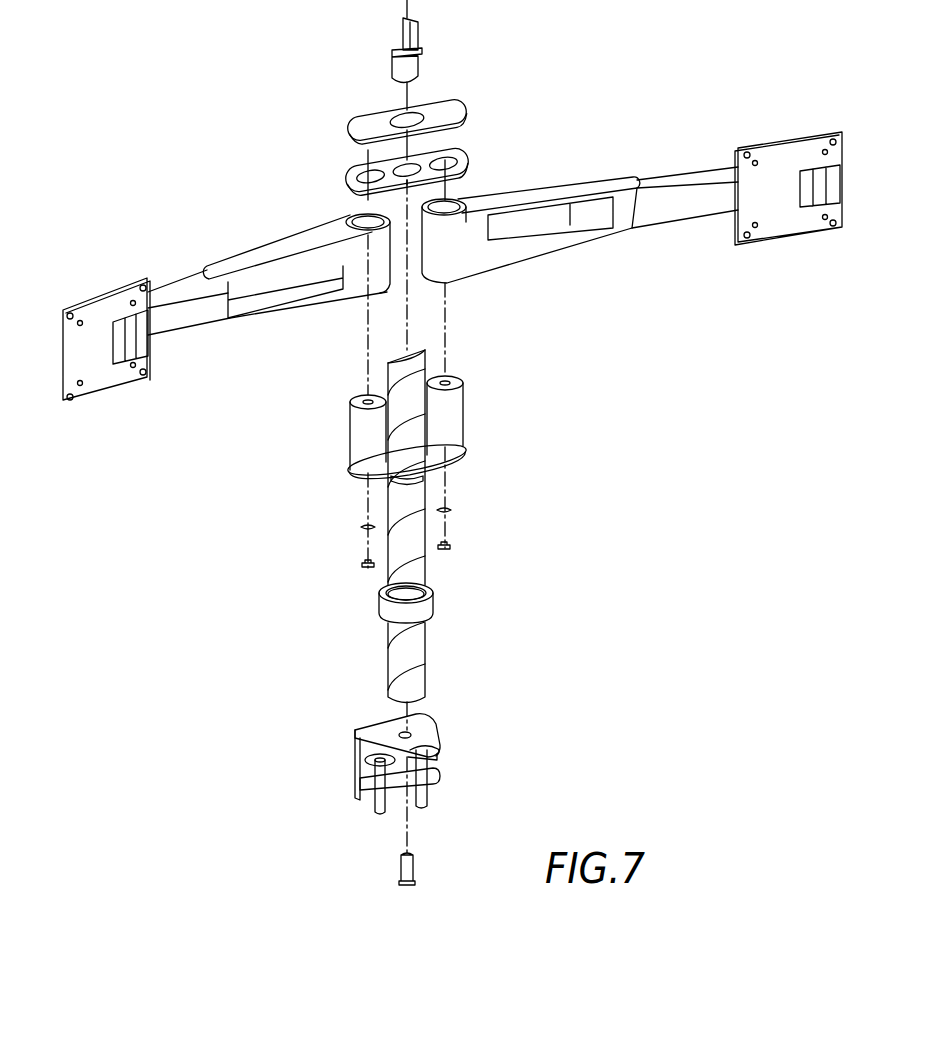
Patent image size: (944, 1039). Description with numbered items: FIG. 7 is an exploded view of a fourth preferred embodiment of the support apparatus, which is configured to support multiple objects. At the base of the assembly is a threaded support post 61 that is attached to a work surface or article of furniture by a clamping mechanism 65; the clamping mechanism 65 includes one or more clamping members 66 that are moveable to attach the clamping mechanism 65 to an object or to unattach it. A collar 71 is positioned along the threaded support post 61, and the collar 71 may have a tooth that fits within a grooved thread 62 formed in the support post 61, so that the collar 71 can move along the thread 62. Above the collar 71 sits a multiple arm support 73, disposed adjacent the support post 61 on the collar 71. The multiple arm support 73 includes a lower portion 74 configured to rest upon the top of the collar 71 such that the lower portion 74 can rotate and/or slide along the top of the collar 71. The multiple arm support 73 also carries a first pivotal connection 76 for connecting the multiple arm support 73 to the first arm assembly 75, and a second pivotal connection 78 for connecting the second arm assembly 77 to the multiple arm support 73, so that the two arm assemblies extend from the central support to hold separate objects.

The threaded support post 61 is at (427, 651).
The grooved thread 62 is at (420, 580).
The clamping mechanism 65 is at (461, 756).
The clamping members 66 is at (380, 816).
The collar 71 is at (433, 603).
The multiple arm support 73 is at (442, 464).
The lower portion 74 is at (420, 480).
The first arm assembly 75 is at (538, 160).
The first pivotal connection 76 is at (492, 400).
The second arm assembly 77 is at (262, 222).
The second pivotal connection 78 is at (325, 431).